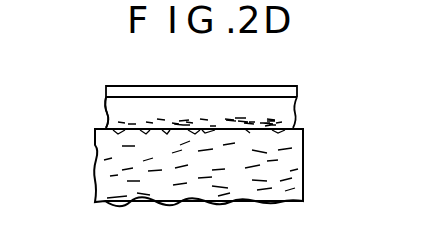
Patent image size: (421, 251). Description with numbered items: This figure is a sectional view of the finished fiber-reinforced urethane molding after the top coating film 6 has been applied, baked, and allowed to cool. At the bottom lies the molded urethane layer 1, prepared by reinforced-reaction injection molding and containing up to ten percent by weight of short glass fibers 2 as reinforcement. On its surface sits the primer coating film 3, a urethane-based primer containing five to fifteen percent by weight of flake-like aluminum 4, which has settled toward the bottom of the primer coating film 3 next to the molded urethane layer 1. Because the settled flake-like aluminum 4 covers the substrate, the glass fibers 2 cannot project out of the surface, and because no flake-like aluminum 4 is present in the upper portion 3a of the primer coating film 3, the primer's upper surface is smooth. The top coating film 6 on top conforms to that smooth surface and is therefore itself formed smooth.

The molded urethane layer 1 is at (303, 162).
The glass fibers 2 is at (244, 203).
The primer coating film 3 is at (298, 108).
The upper portion of the primer coating film 3a is at (117, 106).
The flake-like aluminum 4 is at (210, 117).
The top coating film 6 is at (267, 90).